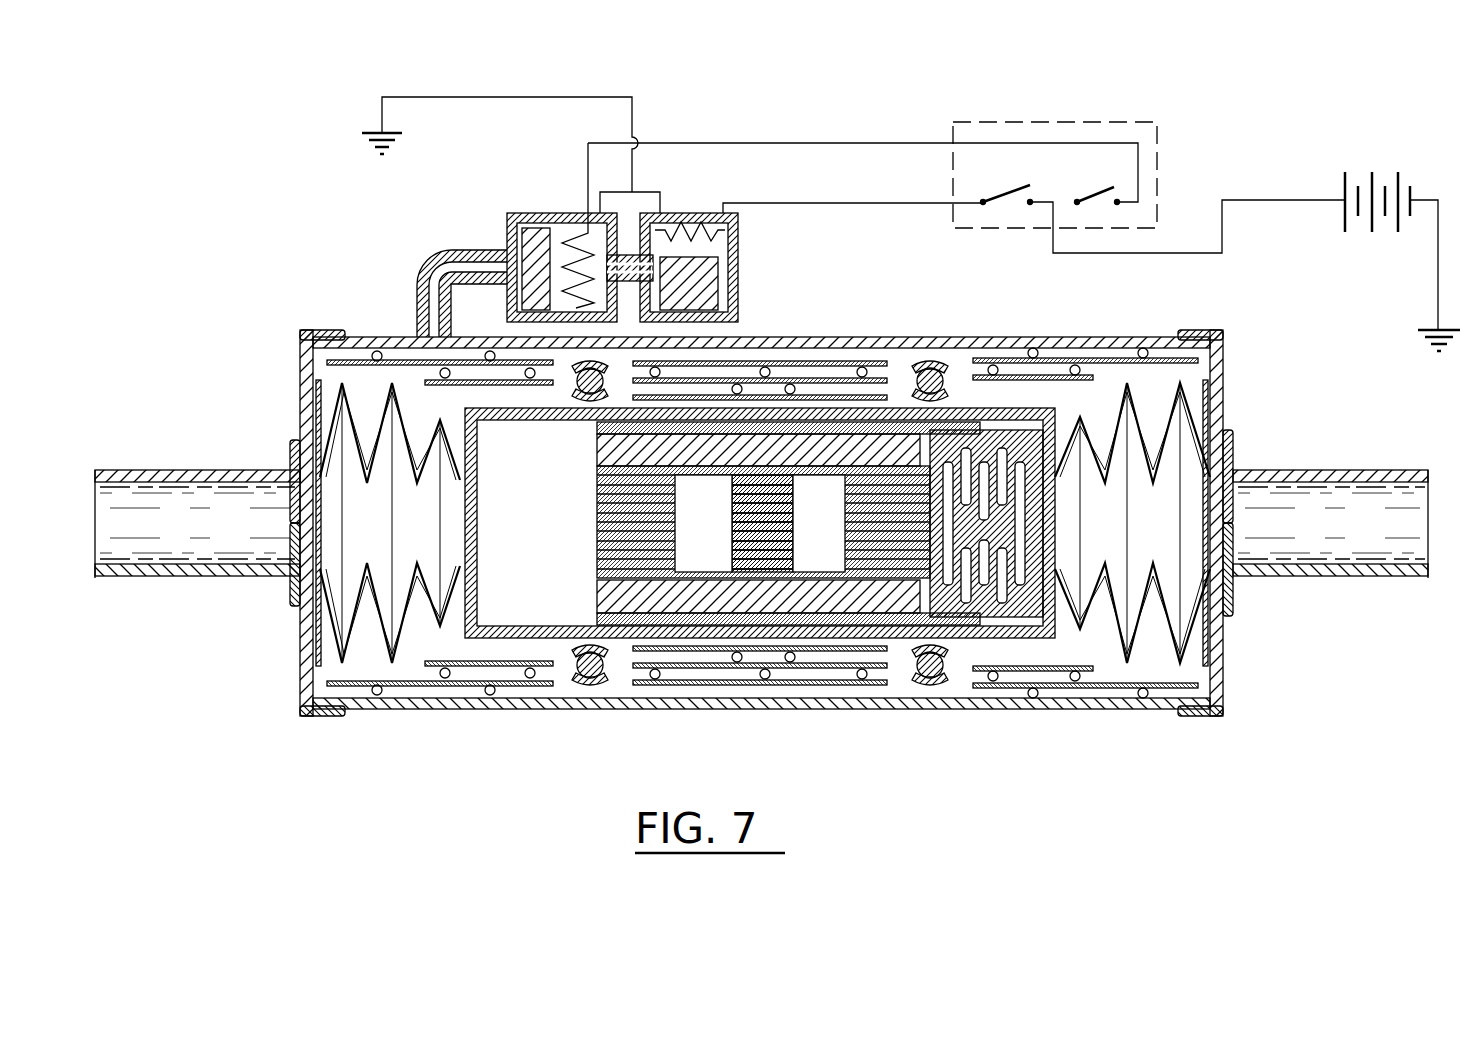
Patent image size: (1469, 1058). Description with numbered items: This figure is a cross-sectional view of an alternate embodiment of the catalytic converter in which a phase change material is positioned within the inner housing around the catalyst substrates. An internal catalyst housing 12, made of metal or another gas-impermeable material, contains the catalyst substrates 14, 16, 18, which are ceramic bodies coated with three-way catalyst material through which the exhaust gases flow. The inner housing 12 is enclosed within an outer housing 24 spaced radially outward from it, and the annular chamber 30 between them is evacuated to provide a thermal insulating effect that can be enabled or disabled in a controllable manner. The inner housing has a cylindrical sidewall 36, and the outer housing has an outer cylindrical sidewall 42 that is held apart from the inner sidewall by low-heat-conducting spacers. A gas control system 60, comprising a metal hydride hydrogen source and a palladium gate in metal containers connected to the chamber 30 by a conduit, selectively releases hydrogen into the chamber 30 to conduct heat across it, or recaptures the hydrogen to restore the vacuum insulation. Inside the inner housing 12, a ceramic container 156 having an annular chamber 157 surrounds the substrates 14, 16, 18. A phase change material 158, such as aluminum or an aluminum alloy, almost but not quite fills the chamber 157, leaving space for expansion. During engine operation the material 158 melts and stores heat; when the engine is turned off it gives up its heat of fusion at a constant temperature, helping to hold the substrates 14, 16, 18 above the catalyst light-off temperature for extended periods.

The internal catalyst housing 12 is at (557, 650).
The catalyst substrate 14 is at (675, 492).
The catalyst substrate 16 is at (733, 541).
The catalyst substrate 18 is at (846, 528).
The outer housing 24 is at (462, 715).
The annular chamber 30 is at (450, 413).
The cylindrical sidewall 36 is at (962, 392).
The outer cylindrical sidewall 42 is at (1054, 348).
The gas control system 60 is at (548, 202).
The ceramic container 156 is at (586, 592).
The annular chamber 157 is at (622, 452).
The phase change material 158 is at (586, 466).